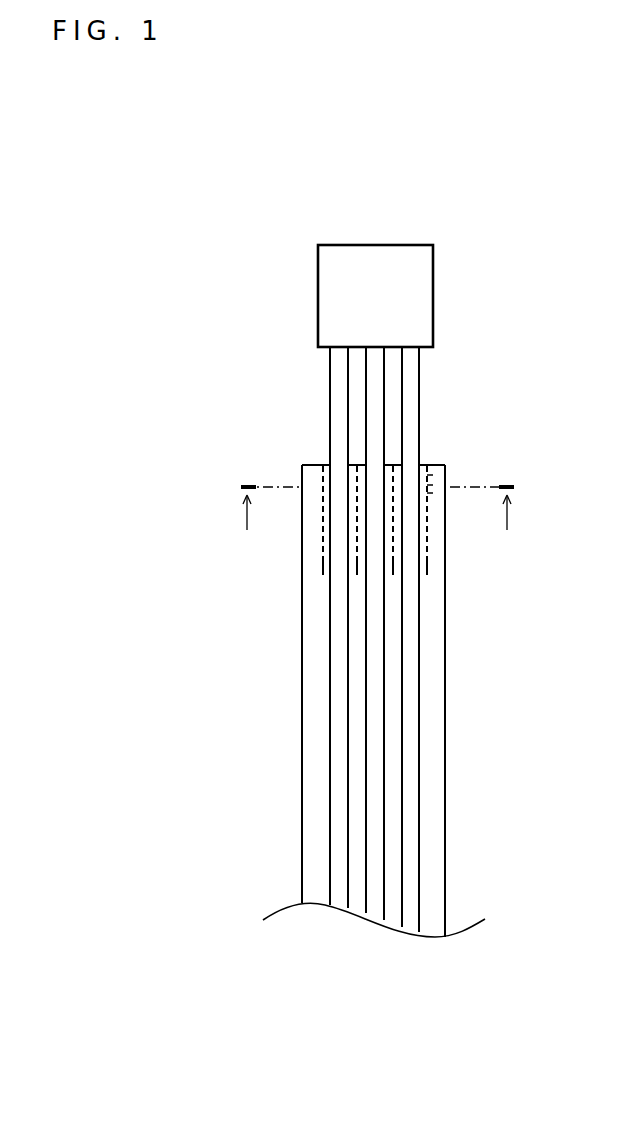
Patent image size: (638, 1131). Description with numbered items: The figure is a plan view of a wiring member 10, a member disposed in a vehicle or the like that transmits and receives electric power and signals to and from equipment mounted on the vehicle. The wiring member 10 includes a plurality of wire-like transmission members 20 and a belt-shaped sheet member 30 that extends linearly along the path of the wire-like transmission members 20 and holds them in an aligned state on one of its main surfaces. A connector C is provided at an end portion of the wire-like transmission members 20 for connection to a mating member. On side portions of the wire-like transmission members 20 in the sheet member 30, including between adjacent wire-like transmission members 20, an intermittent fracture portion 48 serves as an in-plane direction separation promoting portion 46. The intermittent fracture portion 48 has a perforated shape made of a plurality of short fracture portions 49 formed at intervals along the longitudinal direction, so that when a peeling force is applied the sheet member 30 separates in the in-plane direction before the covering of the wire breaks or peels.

The wiring member 10 is at (287, 125).
The connector C is at (422, 293).
The wire-like transmission member 20 is at (340, 410).
The sheet member 30 is at (435, 746).
The intermittent fracture portion 48 is at (352, 570).
The in-plane direction separation promoting portion 46 is at (375, 567).
The short fracture portion 49 is at (431, 493).